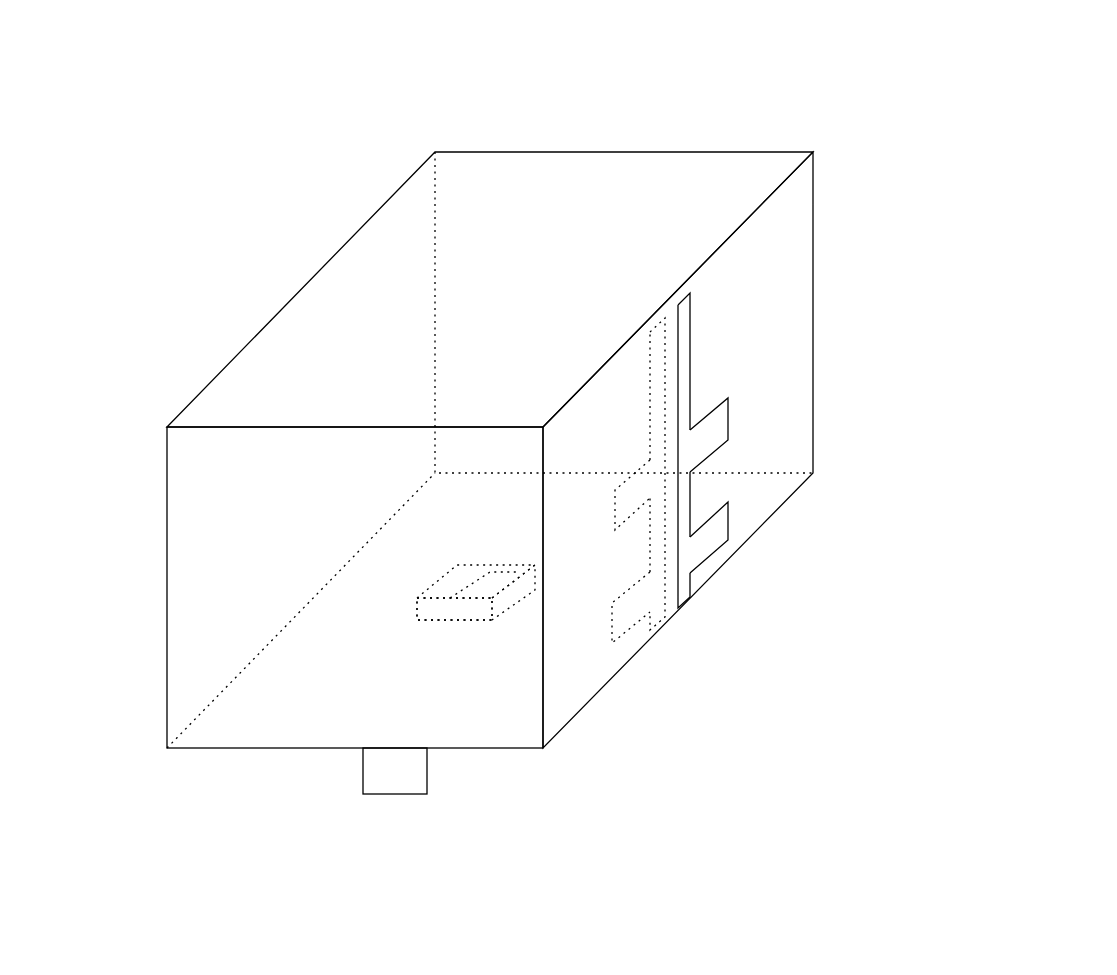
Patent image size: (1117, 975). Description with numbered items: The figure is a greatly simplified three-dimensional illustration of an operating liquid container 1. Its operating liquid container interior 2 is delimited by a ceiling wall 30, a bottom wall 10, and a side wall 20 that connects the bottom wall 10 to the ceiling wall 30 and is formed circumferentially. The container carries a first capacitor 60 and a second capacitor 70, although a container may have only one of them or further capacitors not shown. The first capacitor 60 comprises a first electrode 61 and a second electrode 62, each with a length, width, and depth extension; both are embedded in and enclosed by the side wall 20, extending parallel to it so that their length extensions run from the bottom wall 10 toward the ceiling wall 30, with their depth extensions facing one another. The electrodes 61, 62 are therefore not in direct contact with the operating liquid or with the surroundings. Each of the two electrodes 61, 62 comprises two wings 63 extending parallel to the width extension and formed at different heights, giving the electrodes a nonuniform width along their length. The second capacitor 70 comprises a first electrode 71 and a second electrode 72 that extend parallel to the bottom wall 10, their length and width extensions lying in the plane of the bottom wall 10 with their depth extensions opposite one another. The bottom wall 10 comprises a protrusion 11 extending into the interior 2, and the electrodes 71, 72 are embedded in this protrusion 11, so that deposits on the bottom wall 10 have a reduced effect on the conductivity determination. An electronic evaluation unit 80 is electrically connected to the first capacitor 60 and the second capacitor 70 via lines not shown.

The operating liquid container 1 is at (998, 128).
The operating liquid container interior 2 is at (515, 177).
The bottom wall 10 is at (250, 730).
The protrusion 11 is at (445, 610).
The side wall 20 is at (802, 235).
The ceiling wall 30 is at (627, 177).
The first capacitor 60 is at (717, 373).
The first electrode 61 is at (657, 547).
The second electrode 62 is at (710, 540).
The wings 63 is at (715, 431).
The second capacitor 70 is at (418, 535).
The first electrode 71 is at (440, 595).
The second electrode 72 is at (506, 573).
The electronic evaluation unit 80 is at (385, 782).